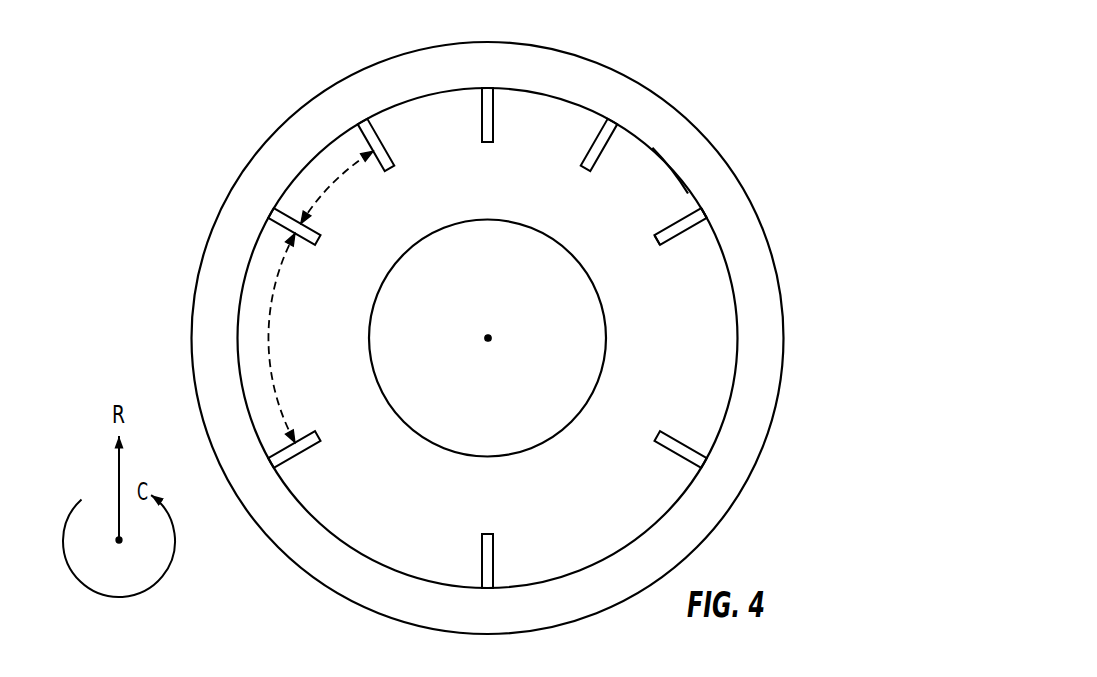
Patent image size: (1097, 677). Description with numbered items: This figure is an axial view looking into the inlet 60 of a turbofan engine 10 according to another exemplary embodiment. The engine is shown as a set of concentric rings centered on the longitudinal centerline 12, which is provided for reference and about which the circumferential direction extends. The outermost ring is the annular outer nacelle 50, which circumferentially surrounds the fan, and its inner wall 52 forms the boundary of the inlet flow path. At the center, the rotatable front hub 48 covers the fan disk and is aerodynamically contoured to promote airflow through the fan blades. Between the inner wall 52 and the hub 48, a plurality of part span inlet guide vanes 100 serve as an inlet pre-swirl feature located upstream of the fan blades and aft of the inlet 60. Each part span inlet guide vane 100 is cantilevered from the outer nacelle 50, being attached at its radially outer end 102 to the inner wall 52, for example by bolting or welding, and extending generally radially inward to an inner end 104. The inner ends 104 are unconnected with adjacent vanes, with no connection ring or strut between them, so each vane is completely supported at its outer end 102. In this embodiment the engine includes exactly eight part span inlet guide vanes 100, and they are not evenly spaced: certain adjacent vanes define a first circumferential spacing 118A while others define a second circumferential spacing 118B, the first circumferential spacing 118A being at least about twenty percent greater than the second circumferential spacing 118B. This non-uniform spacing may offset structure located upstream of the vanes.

The turbofan engine 10 is at (778, 143).
The longitudinal centerline 12 is at (488, 335).
The hub 48 is at (565, 428).
The outer nacelle 50 is at (673, 130).
The inner wall 52 is at (669, 168).
The inlet 60 is at (551, 131).
The part span inlet guide vane 100 is at (682, 233).
The outer end 102 is at (710, 212).
The inner end 104 is at (657, 248).
The first circumferential spacing 118A is at (268, 338).
The second circumferential spacing 118B is at (334, 185).